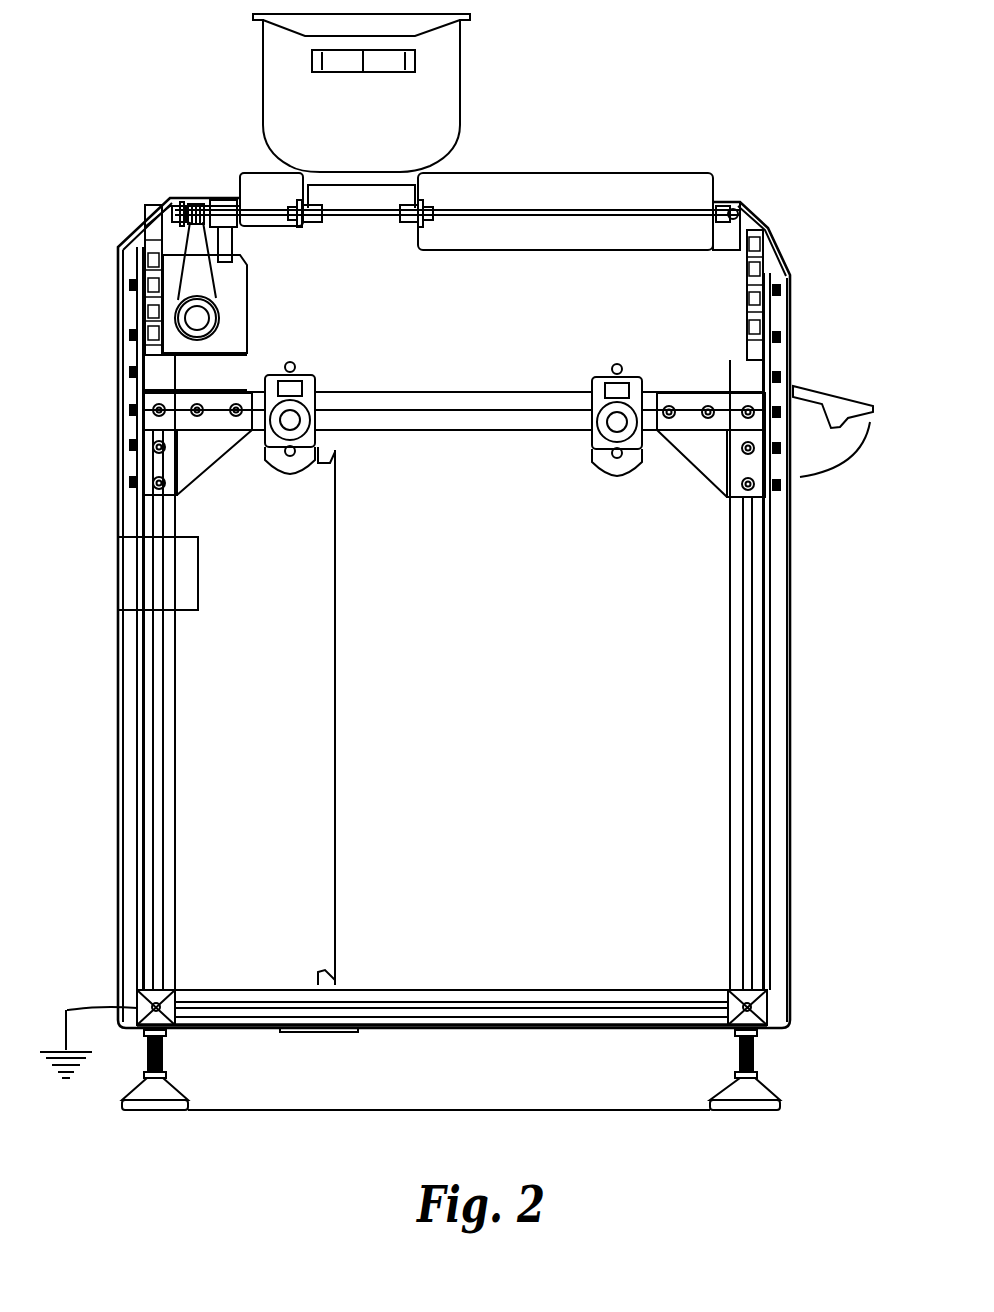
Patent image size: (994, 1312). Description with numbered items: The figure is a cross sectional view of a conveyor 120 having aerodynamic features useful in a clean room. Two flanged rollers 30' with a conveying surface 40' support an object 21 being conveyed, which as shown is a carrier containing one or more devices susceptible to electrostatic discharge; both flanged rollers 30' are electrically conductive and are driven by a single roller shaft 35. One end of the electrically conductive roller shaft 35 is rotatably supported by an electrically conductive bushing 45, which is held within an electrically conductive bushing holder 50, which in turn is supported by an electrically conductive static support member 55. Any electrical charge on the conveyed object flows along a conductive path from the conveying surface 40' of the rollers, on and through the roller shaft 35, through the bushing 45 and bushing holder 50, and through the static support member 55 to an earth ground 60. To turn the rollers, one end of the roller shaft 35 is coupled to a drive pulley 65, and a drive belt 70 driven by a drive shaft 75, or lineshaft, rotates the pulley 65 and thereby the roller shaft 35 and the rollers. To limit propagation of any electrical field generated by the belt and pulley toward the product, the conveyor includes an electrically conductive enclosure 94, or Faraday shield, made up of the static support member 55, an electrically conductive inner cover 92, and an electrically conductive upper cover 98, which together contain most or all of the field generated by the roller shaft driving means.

The conveyor 120 is at (142, 172).
The object 21 is at (460, 63).
The roller shaft 35 is at (515, 222).
The flanged roller 30' is at (295, 253).
The conveying surface 40' is at (418, 253).
The bushing 45 is at (160, 212).
The bushing holder 50 is at (181, 200).
The static support member 55 is at (143, 310).
The earth ground 60 is at (67, 1010).
The drive pulley 65 is at (193, 204).
The drive belt 70 is at (248, 310).
The drive shaft 75 is at (197, 318).
The inner cover 92 is at (230, 357).
The electrically conductive enclosure 94 is at (248, 353).
The upper cover 98 is at (213, 200).